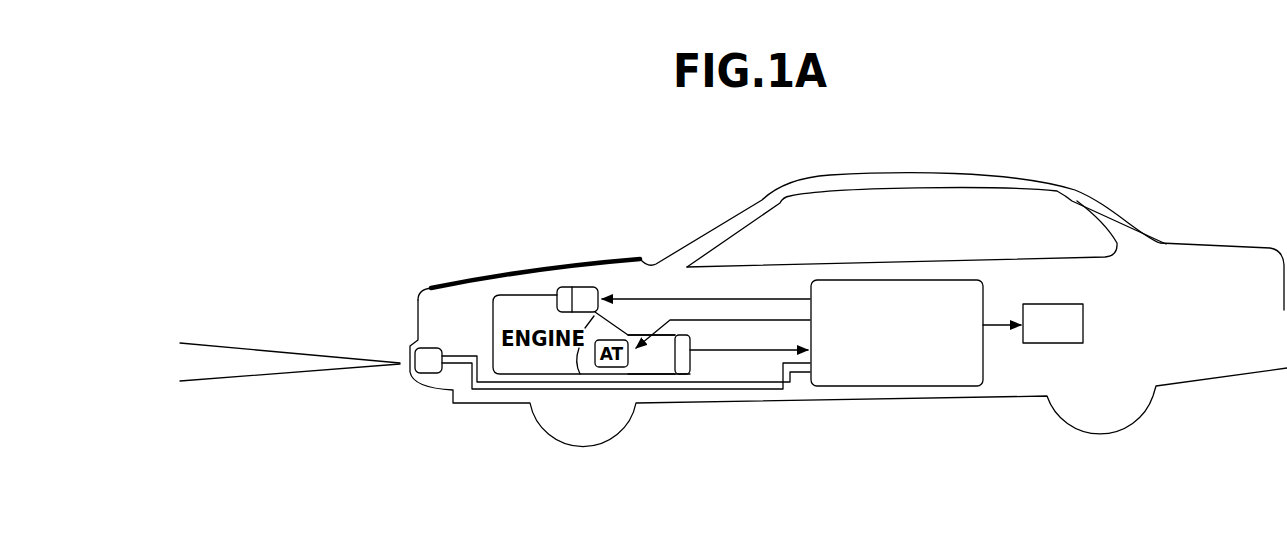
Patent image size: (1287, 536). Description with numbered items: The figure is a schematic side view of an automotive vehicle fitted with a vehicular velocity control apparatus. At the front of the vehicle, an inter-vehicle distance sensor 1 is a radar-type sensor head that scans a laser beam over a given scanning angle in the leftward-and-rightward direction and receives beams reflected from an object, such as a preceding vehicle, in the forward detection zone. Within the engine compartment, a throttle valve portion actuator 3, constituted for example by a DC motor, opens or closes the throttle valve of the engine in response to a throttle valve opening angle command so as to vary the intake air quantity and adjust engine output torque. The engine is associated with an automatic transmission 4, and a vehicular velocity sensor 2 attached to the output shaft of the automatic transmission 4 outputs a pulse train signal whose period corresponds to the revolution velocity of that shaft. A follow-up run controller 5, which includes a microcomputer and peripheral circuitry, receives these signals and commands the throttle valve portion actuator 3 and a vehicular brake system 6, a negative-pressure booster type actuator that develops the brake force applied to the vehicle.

The inter-vehicle distance sensor 1 is at (414, 344).
The vehicular velocity sensor 2 is at (694, 363).
The throttle valve portion actuator 3 is at (578, 286).
The automatic transmission 4 is at (639, 371).
The follow-up run controller 5 is at (917, 389).
The vehicular brake system 6 is at (1046, 347).